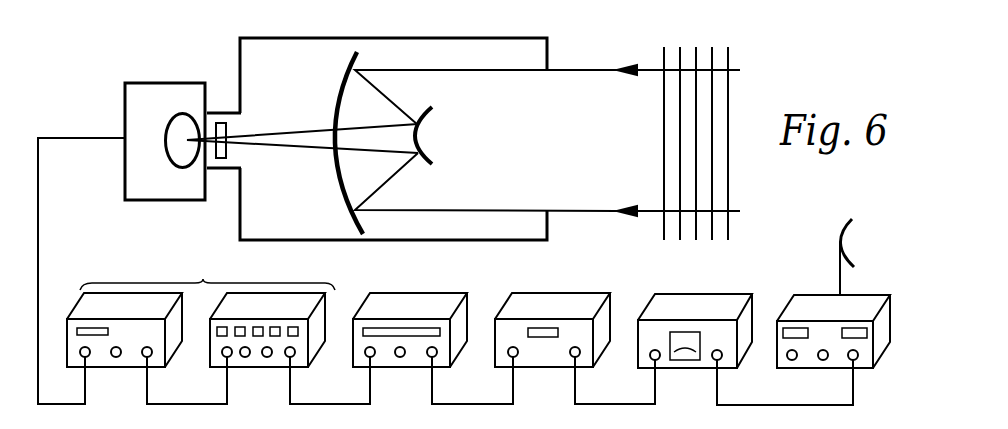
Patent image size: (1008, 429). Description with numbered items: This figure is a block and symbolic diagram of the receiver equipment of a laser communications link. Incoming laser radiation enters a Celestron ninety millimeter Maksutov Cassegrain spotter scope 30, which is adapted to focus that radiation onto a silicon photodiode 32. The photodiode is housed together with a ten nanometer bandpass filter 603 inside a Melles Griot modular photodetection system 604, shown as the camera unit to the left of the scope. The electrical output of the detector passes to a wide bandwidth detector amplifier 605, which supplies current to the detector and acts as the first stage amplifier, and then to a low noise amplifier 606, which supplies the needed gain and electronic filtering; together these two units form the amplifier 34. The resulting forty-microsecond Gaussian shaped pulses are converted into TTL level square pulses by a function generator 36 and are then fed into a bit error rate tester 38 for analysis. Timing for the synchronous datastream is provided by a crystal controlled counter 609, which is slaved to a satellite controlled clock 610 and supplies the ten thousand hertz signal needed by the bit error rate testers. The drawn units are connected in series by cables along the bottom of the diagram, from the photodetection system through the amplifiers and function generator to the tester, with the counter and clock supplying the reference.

The spotter scope 30 is at (493, 38).
The silicon photodiode 32 is at (175, 128).
The bandpass filter 603 is at (221, 121).
The modular photodetection system 604 is at (125, 108).
The amplifier 34 is at (207, 272).
The wide bandwidth detector amplifier 605 is at (173, 333).
The low noise amplifier 606 is at (316, 333).
The function generator 36 is at (455, 332).
The bit error rate tester 38 is at (598, 332).
The crystal controlled counter 609 is at (754, 318).
The satellite controlled clock 610 is at (827, 370).